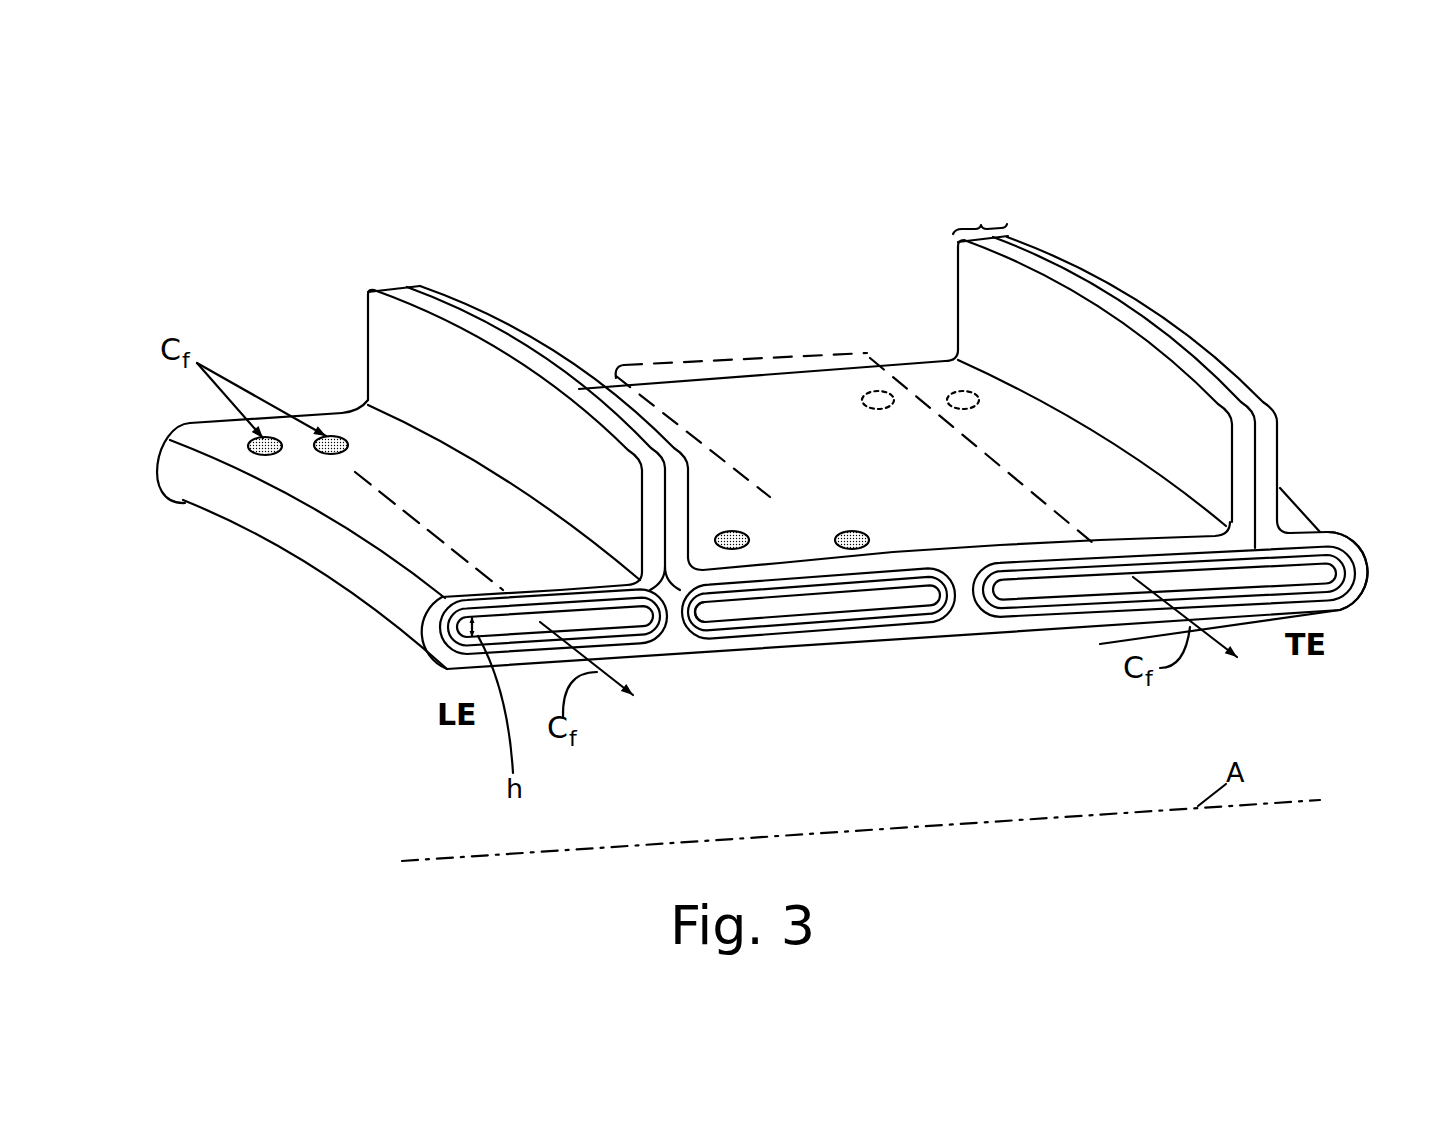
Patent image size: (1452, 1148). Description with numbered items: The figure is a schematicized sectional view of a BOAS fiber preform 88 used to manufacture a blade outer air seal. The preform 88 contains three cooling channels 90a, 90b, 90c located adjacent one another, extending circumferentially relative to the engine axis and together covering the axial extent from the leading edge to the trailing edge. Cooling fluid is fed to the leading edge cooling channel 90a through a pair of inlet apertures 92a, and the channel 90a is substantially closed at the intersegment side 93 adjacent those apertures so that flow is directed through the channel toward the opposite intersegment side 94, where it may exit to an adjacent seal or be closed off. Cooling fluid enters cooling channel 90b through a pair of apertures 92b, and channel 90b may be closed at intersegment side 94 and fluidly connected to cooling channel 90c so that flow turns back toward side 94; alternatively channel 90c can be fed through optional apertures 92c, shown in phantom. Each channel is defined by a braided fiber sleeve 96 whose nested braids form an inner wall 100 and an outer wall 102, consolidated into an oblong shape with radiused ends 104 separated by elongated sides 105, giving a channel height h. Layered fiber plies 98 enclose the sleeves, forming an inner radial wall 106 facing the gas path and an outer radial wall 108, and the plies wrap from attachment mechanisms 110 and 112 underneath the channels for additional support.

The fiber preform 88 is at (1003, 121).
The leading edge cooling channel 90a is at (600, 622).
The cooling channel 90b is at (850, 602).
The cooling channel 90c is at (1029, 592).
The inlet apertures 92a is at (330, 455).
The inlet apertures 92b is at (835, 540).
The optional apertures 92c is at (958, 392).
The intersegment side 93 is at (340, 413).
The intersegment side 94 is at (447, 670).
The braided fiber sleeves 96 is at (1334, 565).
The fiber plies 98 is at (980, 212).
The inner wall 100 is at (1164, 582).
The outer wall 102 is at (1134, 556).
The radiused ends 104 is at (700, 615).
The elongated sides 105 is at (782, 605).
The inner radial wall 106 is at (1233, 620).
The outer radial wall 108 is at (815, 446).
The attachment mechanism 110 is at (517, 342).
The attachment mechanism 112 is at (1097, 272).